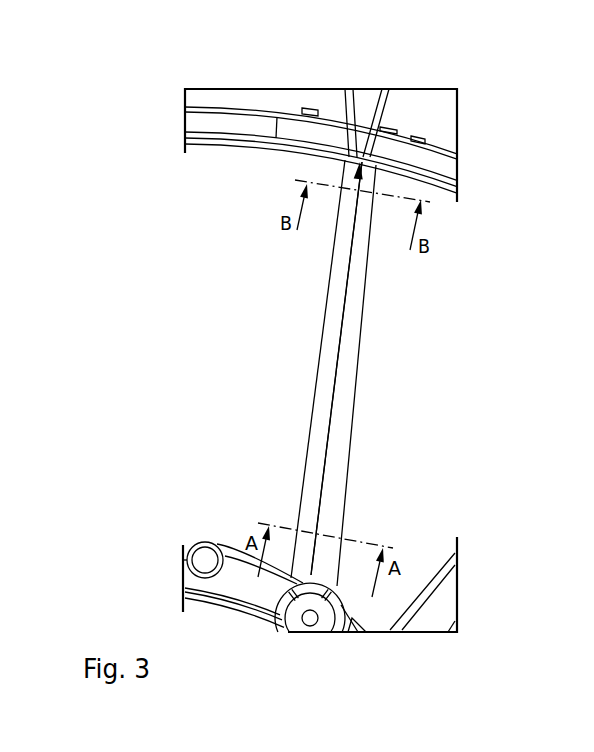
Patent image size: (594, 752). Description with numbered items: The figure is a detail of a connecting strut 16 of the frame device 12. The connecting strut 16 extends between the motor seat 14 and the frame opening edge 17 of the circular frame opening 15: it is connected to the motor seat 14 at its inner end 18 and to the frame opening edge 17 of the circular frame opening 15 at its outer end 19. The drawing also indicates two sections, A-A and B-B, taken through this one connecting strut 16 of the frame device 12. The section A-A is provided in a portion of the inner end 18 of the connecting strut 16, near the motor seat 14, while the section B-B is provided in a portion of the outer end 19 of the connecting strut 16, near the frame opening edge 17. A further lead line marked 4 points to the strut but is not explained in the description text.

The frame device 12 is at (470, 98).
The motor seat 14 is at (238, 552).
The circular frame opening 15 is at (445, 172).
The connecting strut 16 is at (345, 345).
The spoke web 4 is at (333, 400).
The frame opening edge 17 is at (418, 168).
The inner end 18 is at (301, 566).
The outer end 19 is at (354, 170).